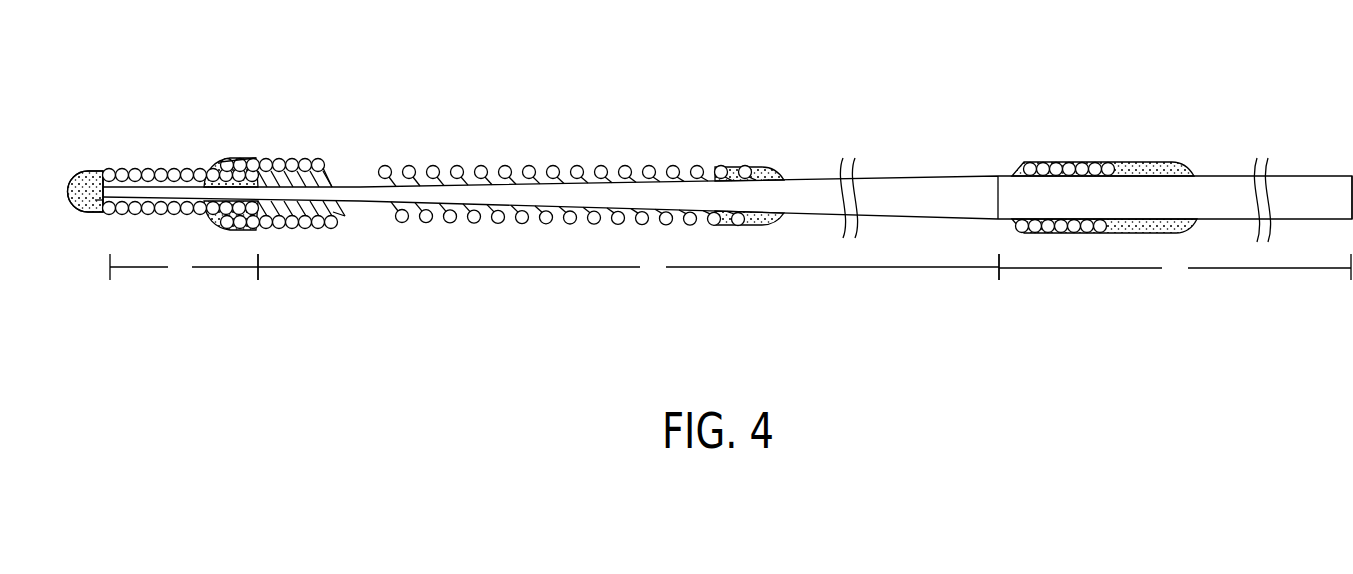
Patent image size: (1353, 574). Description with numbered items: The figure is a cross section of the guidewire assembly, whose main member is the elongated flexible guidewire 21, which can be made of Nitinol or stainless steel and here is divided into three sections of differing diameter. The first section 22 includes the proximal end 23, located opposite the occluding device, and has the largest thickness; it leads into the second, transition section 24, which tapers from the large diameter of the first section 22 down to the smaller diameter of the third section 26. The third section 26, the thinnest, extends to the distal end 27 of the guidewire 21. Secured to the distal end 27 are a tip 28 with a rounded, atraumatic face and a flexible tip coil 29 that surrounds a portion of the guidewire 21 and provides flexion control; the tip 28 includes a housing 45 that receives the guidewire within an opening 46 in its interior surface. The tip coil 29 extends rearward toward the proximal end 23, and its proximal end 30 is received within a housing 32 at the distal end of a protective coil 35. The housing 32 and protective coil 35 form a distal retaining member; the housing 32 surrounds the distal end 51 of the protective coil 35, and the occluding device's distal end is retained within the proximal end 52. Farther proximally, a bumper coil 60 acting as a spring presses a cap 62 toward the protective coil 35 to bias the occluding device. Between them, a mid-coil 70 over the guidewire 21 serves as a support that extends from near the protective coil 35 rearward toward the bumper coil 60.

The guidewire 21 is at (363, 190).
The first section 22 is at (1175, 268).
The proximal end 23 is at (1323, 187).
The second, transition section 24 is at (628, 267).
The third, distal section 26 is at (184, 267).
The distal end 27 is at (98, 173).
The tip 28 is at (70, 210).
The tip coil 29 is at (137, 170).
The proximal end of the tip coil 30 is at (250, 173).
The housing 32 is at (217, 167).
The protective coil 35 is at (290, 160).
The housing 45 is at (68, 178).
The opening 46 is at (95, 213).
The distal end of the protective coil 51 is at (222, 162).
The proximal end of the protective coil 52 is at (323, 168).
The bumper coil 60 is at (1065, 164).
The cap 62 is at (1011, 170).
The mid-coil 70 is at (550, 167).